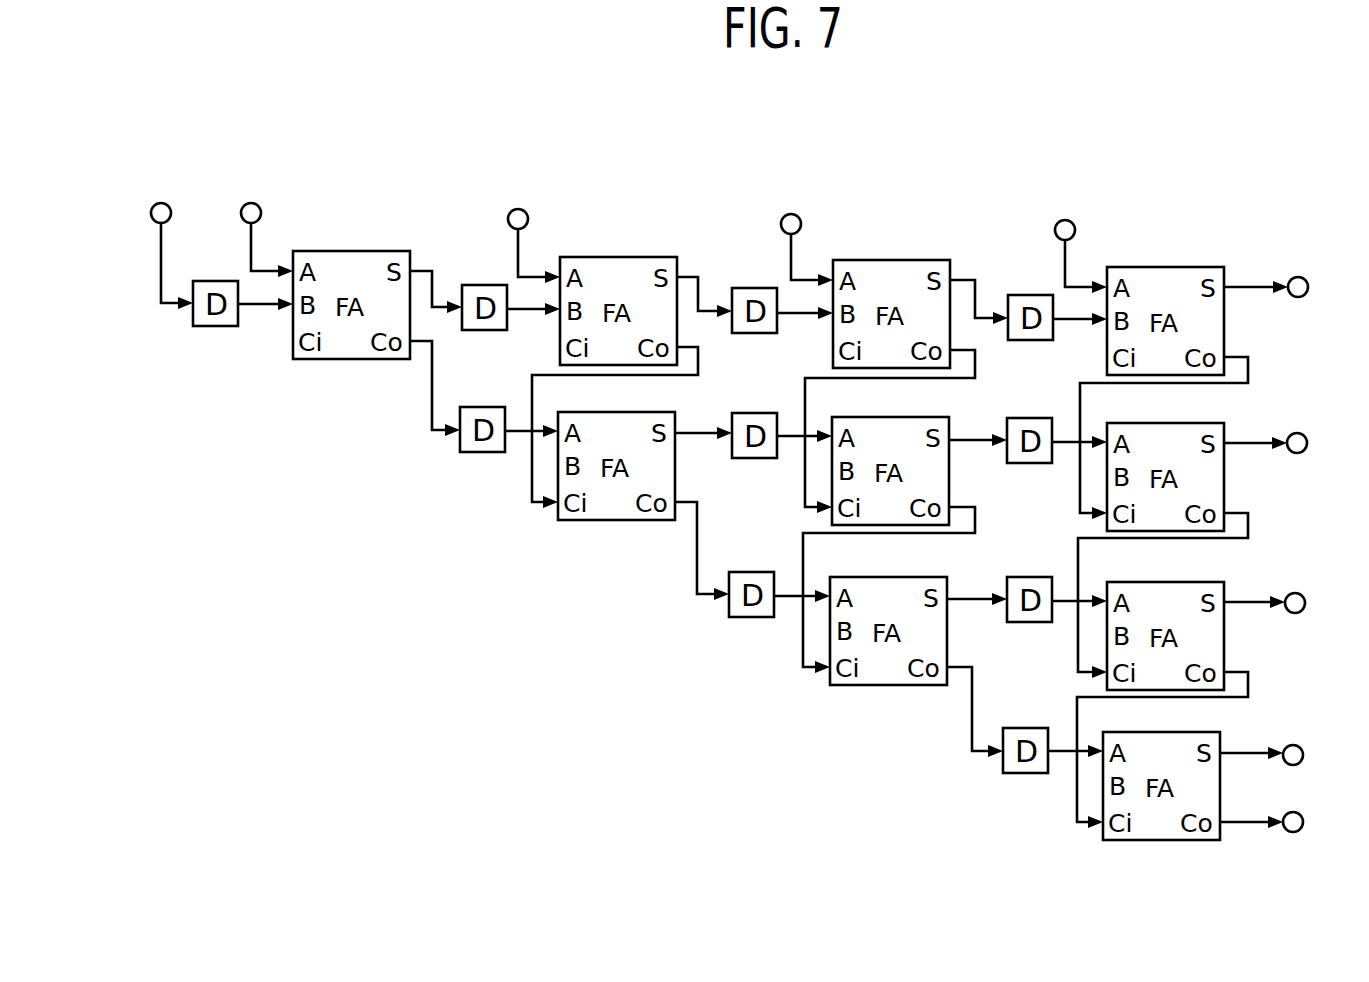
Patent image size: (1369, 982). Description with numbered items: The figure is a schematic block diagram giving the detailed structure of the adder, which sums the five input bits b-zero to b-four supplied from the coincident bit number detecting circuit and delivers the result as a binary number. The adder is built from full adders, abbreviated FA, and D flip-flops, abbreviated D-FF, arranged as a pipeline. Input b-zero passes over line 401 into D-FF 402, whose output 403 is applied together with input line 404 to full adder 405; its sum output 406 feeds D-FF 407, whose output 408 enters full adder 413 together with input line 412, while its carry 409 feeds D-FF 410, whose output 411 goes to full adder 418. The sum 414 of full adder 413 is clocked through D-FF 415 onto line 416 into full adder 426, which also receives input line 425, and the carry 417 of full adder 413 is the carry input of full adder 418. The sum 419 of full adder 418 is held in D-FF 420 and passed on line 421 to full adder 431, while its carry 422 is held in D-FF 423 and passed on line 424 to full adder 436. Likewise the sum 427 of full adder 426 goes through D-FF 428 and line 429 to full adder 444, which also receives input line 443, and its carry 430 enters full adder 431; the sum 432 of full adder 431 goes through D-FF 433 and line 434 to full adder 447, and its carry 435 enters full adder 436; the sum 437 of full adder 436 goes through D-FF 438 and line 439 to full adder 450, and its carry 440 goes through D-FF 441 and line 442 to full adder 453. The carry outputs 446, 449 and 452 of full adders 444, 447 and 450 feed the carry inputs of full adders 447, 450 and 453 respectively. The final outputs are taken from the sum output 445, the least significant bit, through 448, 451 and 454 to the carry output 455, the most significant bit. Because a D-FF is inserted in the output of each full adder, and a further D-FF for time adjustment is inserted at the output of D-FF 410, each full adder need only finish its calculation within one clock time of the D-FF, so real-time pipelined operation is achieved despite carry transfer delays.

The input b0 line 401 is at (161, 250).
The delay circuit 402 is at (213, 326).
The delayed b0 line 403 is at (259, 310).
The input b1 line 404 is at (251, 237).
The full adder 405 is at (359, 251).
The sum output line 406 is at (422, 268).
The delay circuit 407 is at (485, 331).
The delayed sum line 408 is at (527, 312).
The carry output line 409 is at (430, 392).
The D-FF 410 is at (483, 453).
The delayed carry line 411 is at (520, 433).
The input b2 line 412 is at (518, 243).
The full adder 413 is at (628, 257).
The sum output line 414 is at (690, 275).
The delay circuit 415 is at (740, 335).
The delayed sum line 416 is at (802, 318).
The carry output line 417 is at (690, 378).
The full adder 418 is at (585, 412).
The sum output line 419 is at (697, 440).
The delay circuit 420 is at (750, 458).
The delayed sum line 421 is at (790, 432).
The carry output line 422 is at (722, 562).
The delay circuit 423 is at (750, 617).
The delayed carry line 424 is at (787, 590).
The input b3 line 425 is at (791, 247).
The full adder 426 is at (903, 260).
The sum output line 427 is at (965, 278).
The delay circuit 428 is at (1013, 342).
The delayed sum line 429 is at (1078, 320).
The carry output line 430 is at (967, 380).
The full adder 431 is at (855, 417).
The sum output line 432 is at (970, 445).
The delay circuit 433 is at (1030, 462).
The delayed sum line 434 is at (1062, 432).
The carry output line 435 is at (967, 535).
The full adder 436 is at (852, 577).
The sum output line 437 is at (970, 603).
The delay circuit 438 is at (1027, 622).
The delayed sum line 439 is at (1062, 595).
The carry output line 440 is at (970, 725).
The delay circuit 441 is at (1025, 773).
The delayed carry line 442 is at (1058, 755).
The input b4 line 443 is at (1065, 252).
The full adder 444 is at (1178, 267).
The output 445 is at (1238, 283).
The carry output line 446 is at (1248, 365).
The full adder 447 is at (1128, 423).
The output 448 is at (1250, 441).
The carry output line 449 is at (1248, 520).
The full adder 450 is at (1125, 582).
The output 451 is at (1248, 600).
The carry output line 452 is at (1248, 680).
The full adder 453 is at (1122, 732).
The output 454 is at (1248, 752).
The output 455 is at (1243, 825).